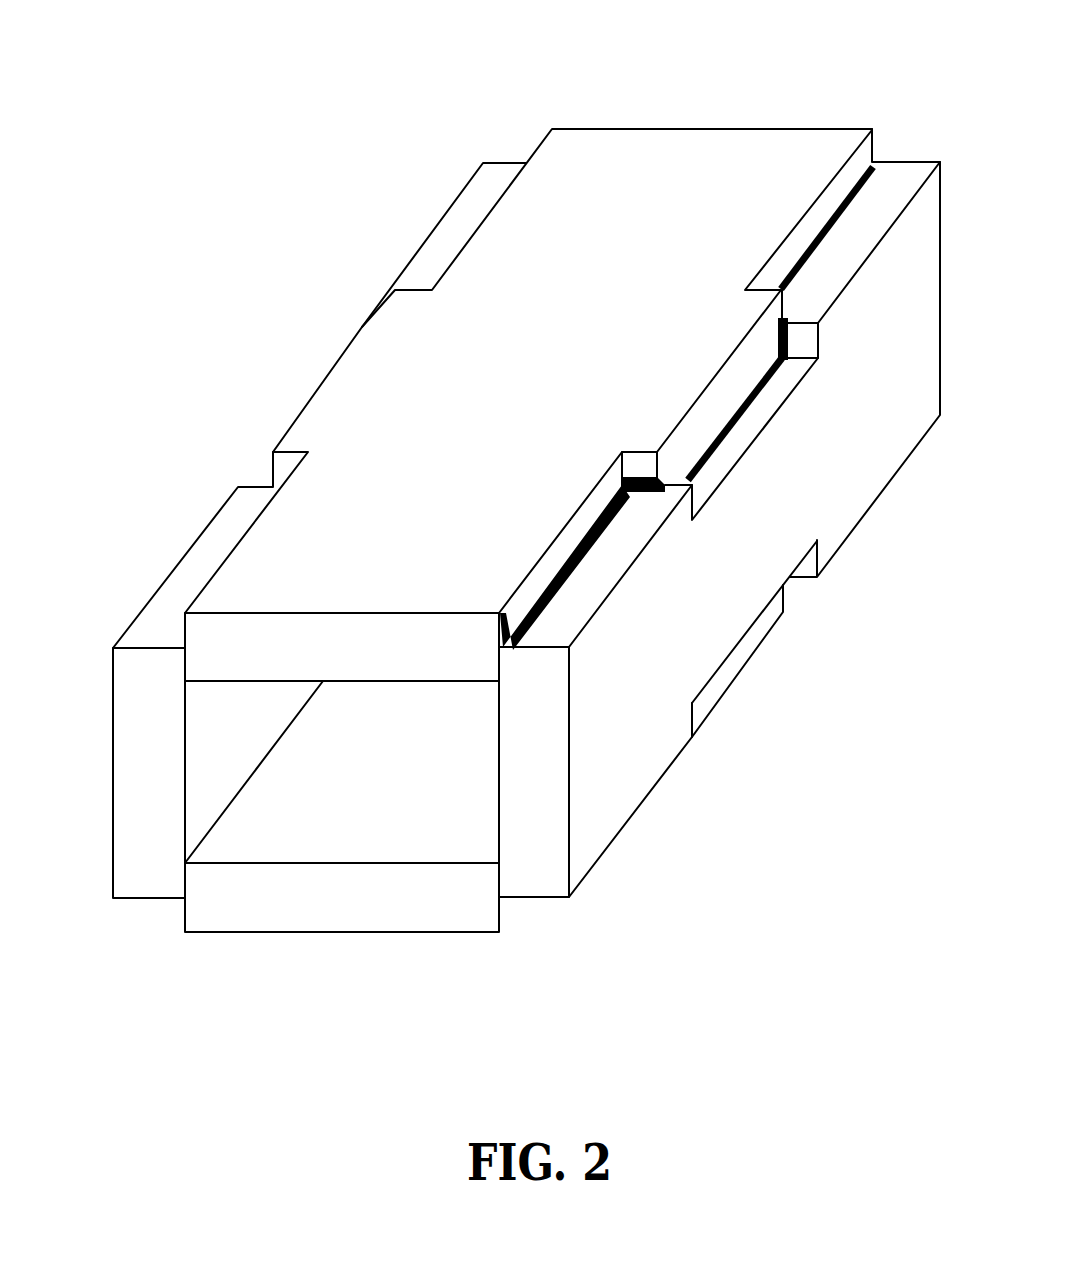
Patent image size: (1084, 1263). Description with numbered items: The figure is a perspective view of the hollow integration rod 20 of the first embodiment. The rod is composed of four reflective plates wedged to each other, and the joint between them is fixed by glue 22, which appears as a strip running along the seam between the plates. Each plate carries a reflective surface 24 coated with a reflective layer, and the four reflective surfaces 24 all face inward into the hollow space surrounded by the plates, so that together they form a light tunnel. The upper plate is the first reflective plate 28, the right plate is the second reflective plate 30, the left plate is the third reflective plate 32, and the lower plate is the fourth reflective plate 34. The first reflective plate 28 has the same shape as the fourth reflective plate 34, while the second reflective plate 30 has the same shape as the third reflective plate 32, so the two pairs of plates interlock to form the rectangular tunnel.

The hollow integration rod 20 is at (432, 82).
The glue 22 is at (550, 590).
The reflective surface 24 is at (423, 808).
The first reflective plate 28 is at (342, 637).
The second reflective plate 30 is at (548, 800).
The third reflective plate 32 is at (130, 673).
The fourth reflective plate 34 is at (277, 905).